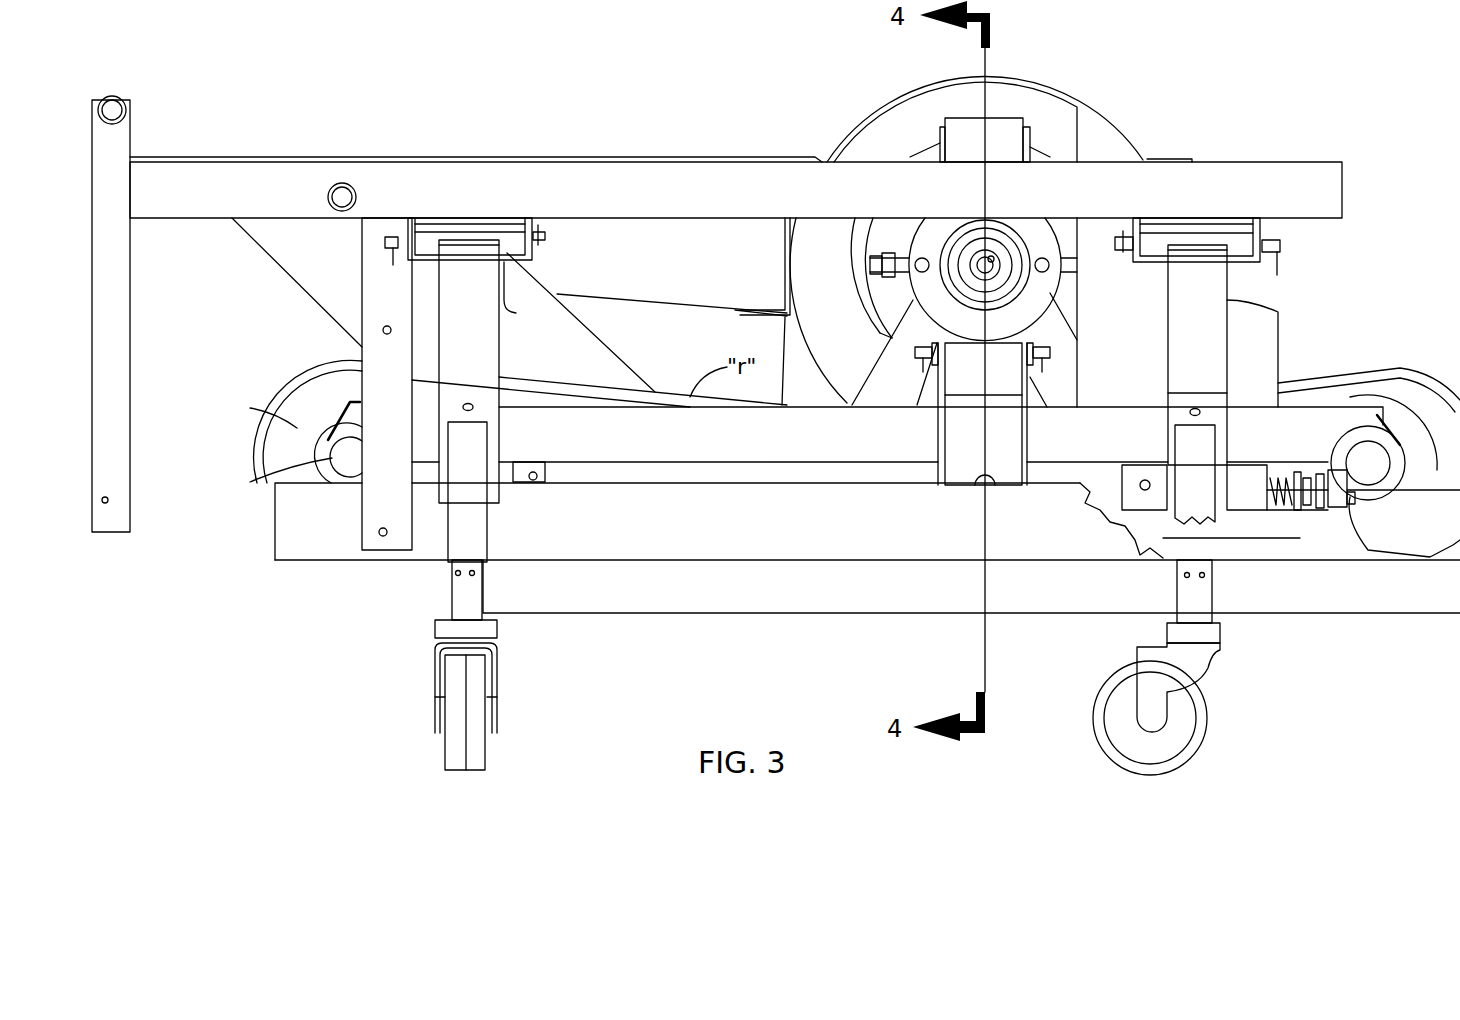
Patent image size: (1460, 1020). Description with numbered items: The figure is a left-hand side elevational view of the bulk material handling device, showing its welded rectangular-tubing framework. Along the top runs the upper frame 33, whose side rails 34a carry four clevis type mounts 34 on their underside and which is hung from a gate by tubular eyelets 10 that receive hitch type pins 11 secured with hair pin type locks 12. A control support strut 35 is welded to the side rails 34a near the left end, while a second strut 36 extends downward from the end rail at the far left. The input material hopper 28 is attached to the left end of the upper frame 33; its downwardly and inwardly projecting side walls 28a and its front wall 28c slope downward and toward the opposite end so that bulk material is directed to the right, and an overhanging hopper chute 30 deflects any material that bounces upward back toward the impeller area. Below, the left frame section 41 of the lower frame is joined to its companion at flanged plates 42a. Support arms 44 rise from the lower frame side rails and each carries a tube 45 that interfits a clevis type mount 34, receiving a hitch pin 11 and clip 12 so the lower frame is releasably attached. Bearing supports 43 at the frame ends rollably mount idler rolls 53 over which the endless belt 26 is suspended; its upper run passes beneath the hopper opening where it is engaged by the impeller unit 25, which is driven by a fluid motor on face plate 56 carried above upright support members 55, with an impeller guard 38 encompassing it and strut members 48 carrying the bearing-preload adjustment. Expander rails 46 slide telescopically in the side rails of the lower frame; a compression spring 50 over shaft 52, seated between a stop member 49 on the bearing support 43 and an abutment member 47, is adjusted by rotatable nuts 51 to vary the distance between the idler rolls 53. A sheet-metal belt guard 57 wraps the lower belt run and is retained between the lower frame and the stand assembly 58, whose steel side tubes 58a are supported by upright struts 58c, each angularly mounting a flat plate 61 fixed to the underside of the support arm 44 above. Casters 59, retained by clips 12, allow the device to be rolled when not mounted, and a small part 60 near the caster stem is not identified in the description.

The tubular eyelet 10 is at (120, 100).
The hitch type pin 11 is at (390, 250).
The hair pin type lock 12 is at (548, 230).
The impeller unit 25 is at (857, 128).
The endless belt 26 is at (1418, 386).
The input material hopper 28 is at (305, 275).
The side wall 28a is at (303, 236).
The front wall 28c is at (590, 350).
The overhanging hopper chute 30 is at (688, 302).
The upper frame 33 is at (1222, 160).
The clevis type mount 34 is at (410, 222).
The side rail 34a is at (480, 158).
The control support strut 35 is at (360, 345).
The strut 36 is at (128, 416).
The impeller guard 38 is at (1032, 80).
The left frame section 41 is at (1113, 418).
The flanged plate 42a is at (535, 484).
The bearing support 43 is at (320, 463).
The support arm 44 is at (500, 335).
The tube 45 is at (508, 300).
The expander rail 46 is at (1280, 365).
The abutment member 47 is at (1238, 512).
The strut member 48 is at (982, 414).
The stop member 49 is at (1350, 512).
The compression spring 50 is at (1278, 512).
The rotatable nut 51 is at (1305, 506).
The shaft 52 is at (1322, 505).
The idler roll 53 is at (293, 430).
The upright support member 55 is at (972, 365).
The face plate 56 is at (964, 312).
The belt guard 57 is at (1450, 578).
The stand assembly 58 is at (792, 616).
The side tube 58a is at (583, 591).
The upright strut 58c is at (490, 542).
The caster 59 is at (488, 755).
The caster stem 60 is at (455, 597).
The flat plate 61 is at (500, 428).